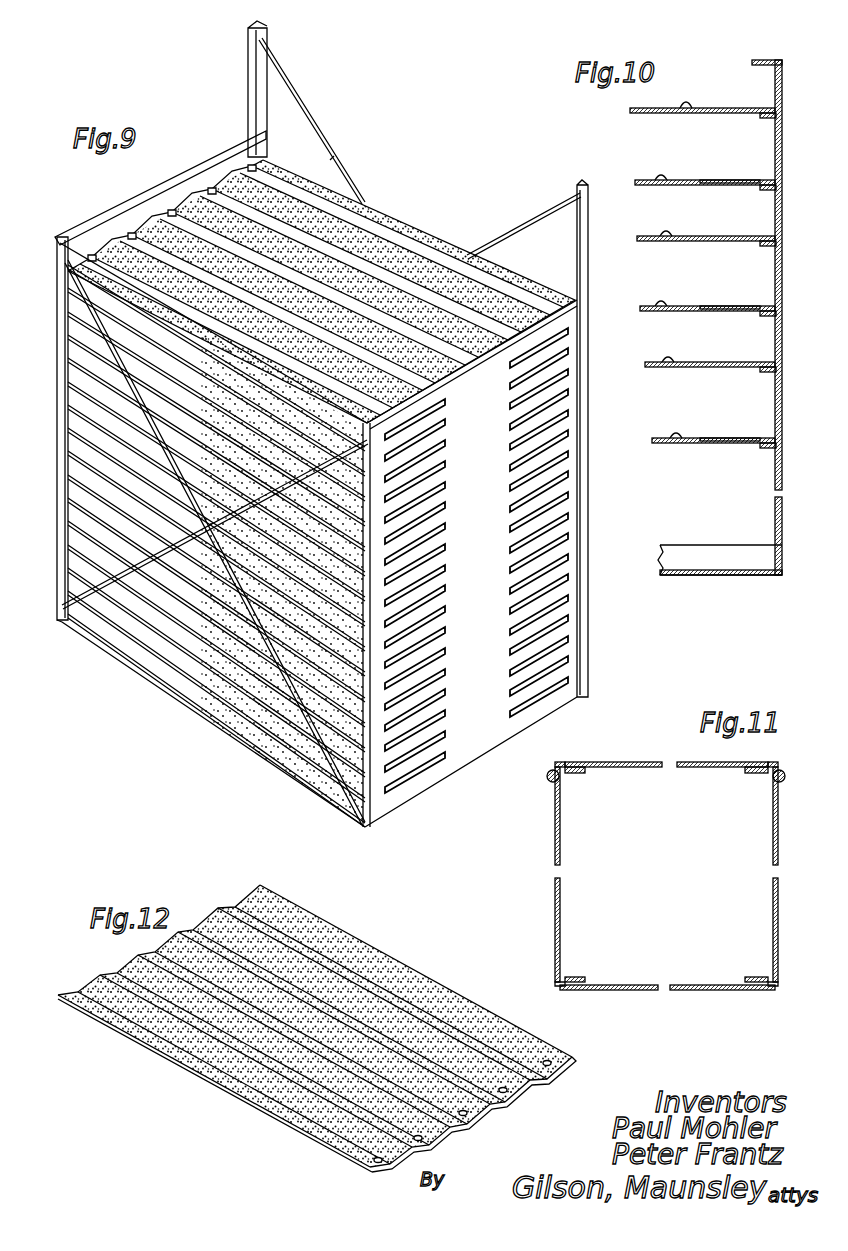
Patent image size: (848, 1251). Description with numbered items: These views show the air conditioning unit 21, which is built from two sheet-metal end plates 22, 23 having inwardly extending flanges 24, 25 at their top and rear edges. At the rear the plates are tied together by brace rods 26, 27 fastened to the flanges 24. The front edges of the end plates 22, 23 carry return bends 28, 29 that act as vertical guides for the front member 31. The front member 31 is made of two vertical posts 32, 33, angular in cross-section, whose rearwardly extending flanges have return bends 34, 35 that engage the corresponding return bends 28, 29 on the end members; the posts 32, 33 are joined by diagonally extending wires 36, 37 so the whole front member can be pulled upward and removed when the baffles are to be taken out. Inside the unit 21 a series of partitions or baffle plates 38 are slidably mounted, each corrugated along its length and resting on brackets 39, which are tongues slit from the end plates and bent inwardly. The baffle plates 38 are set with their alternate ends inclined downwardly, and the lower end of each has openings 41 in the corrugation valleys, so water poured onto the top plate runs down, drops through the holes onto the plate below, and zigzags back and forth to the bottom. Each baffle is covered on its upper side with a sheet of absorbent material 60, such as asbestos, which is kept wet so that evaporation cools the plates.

In FIG. 9, the air conditioning unit 21 is at (321, 285).
In FIG. 9, the end plate 22 is at (172, 178).
In FIG. 11, the end plate 22 is at (555, 892).
In FIG. 9, the end plate 23 is at (410, 795).
In FIG. 10, the end plate 23 is at (782, 423).
In FIG. 11, the end plate 23 is at (778, 908).
In FIG. 9, the inwardly extending flange 24 is at (63, 460).
In FIG. 11, the inwardly extending flange 24 is at (560, 990).
In FIG. 9, the inwardly extending flange 25 is at (448, 372).
In FIG. 10, the inwardly extending flange 25 is at (762, 60).
In FIG. 9, the brace rod 26 is at (86, 622).
In FIG. 11, the brace rod 26 is at (619, 985).
In FIG. 9, the brace rod 27 is at (322, 780).
In FIG. 11, the brace rod 27 is at (695, 985).
In FIG. 11, the return bend 28 is at (545, 778).
In FIG. 11, the return bend 29 is at (782, 781).
In FIG. 9, the front member 31 is at (316, 96).
In FIG. 11, the front member 31 is at (666, 766).
In FIG. 9, the vertical post 32 is at (268, 44).
In FIG. 11, the vertical post 32 is at (560, 765).
In FIG. 11, the vertical post 33 is at (778, 768).
In FIG. 11, the return bend 34 is at (576, 778).
In FIG. 11, the return bend 35 is at (763, 778).
In FIG. 9, the diagonally extending wire 36 is at (333, 158).
In FIG. 11, the diagonally extending wire 36 is at (637, 770).
In FIG. 9, the diagonally extending wire 37 is at (499, 250).
In FIG. 11, the diagonally extending wire 37 is at (690, 770).
In FIG. 9, the baffle plate 38 is at (340, 196).
In FIG. 10, the baffle plate 38 is at (695, 241).
In FIG. 12, the baffle plate 38 is at (385, 957).
In FIG. 10, the bracket 39 is at (763, 120).
In FIG. 9, the opening 41 is at (212, 188).
In FIG. 10, the opening 41 is at (750, 180).
In FIG. 12, the opening 41 is at (547, 1068).
In FIG. 9, the absorbent material 60 is at (425, 270).
In FIG. 10, the absorbent material 60 is at (685, 112).
In FIG. 12, the absorbent material 60 is at (456, 1006).